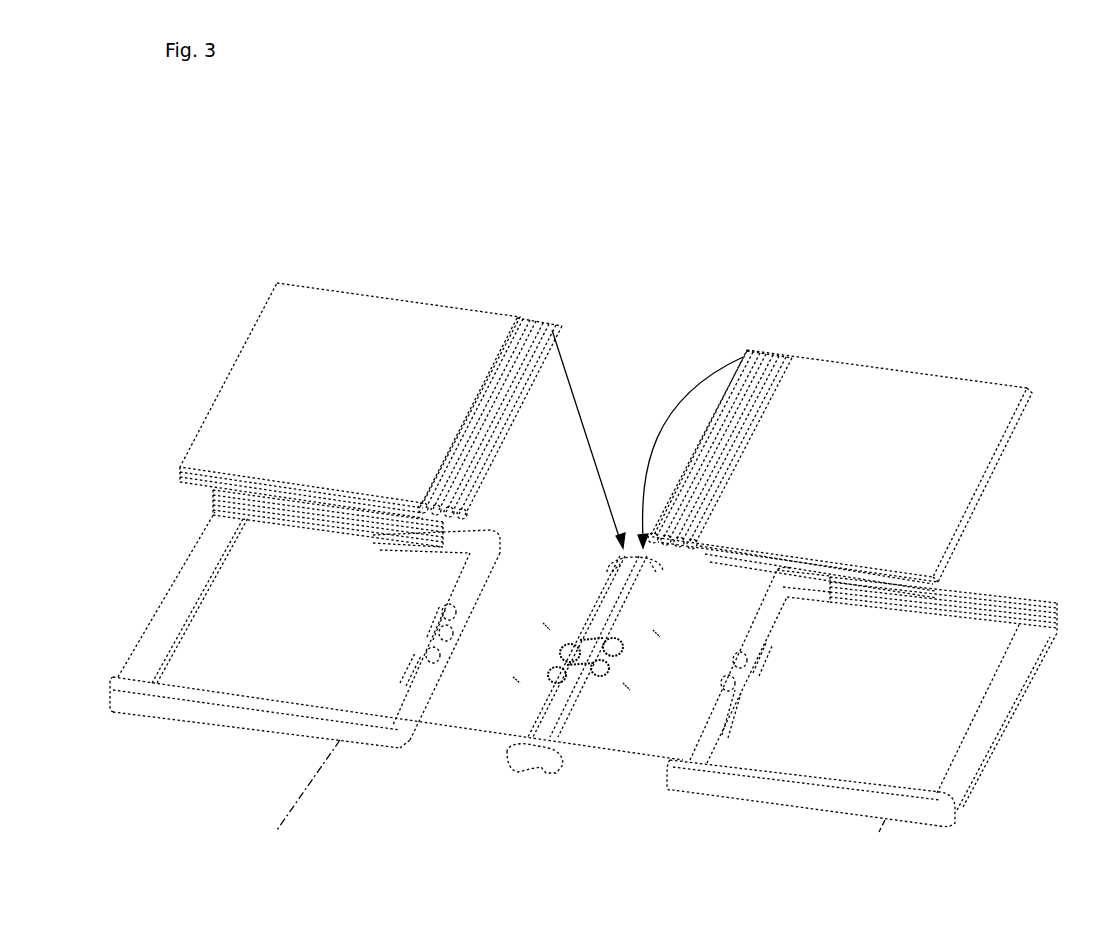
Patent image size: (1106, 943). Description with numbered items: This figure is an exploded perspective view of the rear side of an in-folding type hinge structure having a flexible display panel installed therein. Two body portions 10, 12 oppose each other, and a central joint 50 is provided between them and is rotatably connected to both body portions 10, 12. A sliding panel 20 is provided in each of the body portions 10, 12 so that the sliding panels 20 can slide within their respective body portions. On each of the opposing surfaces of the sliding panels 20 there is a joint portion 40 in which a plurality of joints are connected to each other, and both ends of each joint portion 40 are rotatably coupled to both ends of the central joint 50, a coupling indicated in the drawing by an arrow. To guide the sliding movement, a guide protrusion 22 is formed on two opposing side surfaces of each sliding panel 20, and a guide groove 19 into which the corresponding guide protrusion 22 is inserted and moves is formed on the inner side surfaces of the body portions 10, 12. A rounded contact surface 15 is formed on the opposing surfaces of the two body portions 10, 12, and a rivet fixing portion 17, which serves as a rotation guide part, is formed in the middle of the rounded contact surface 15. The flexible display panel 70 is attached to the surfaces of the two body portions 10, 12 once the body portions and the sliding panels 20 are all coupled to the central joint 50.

The body portion 10 is at (907, 723).
The body portion 12 is at (252, 627).
The rounded contact surface 15 is at (760, 633).
The rivet fixing portion 17 is at (457, 627).
The guide groove 19 is at (937, 603).
The sliding panel 20 is at (283, 386).
The guide protrusion 22 is at (213, 487).
The joint portion 40 is at (500, 407).
The central joint 50 is at (617, 587).
The flexible display panel 70 is at (340, 788).